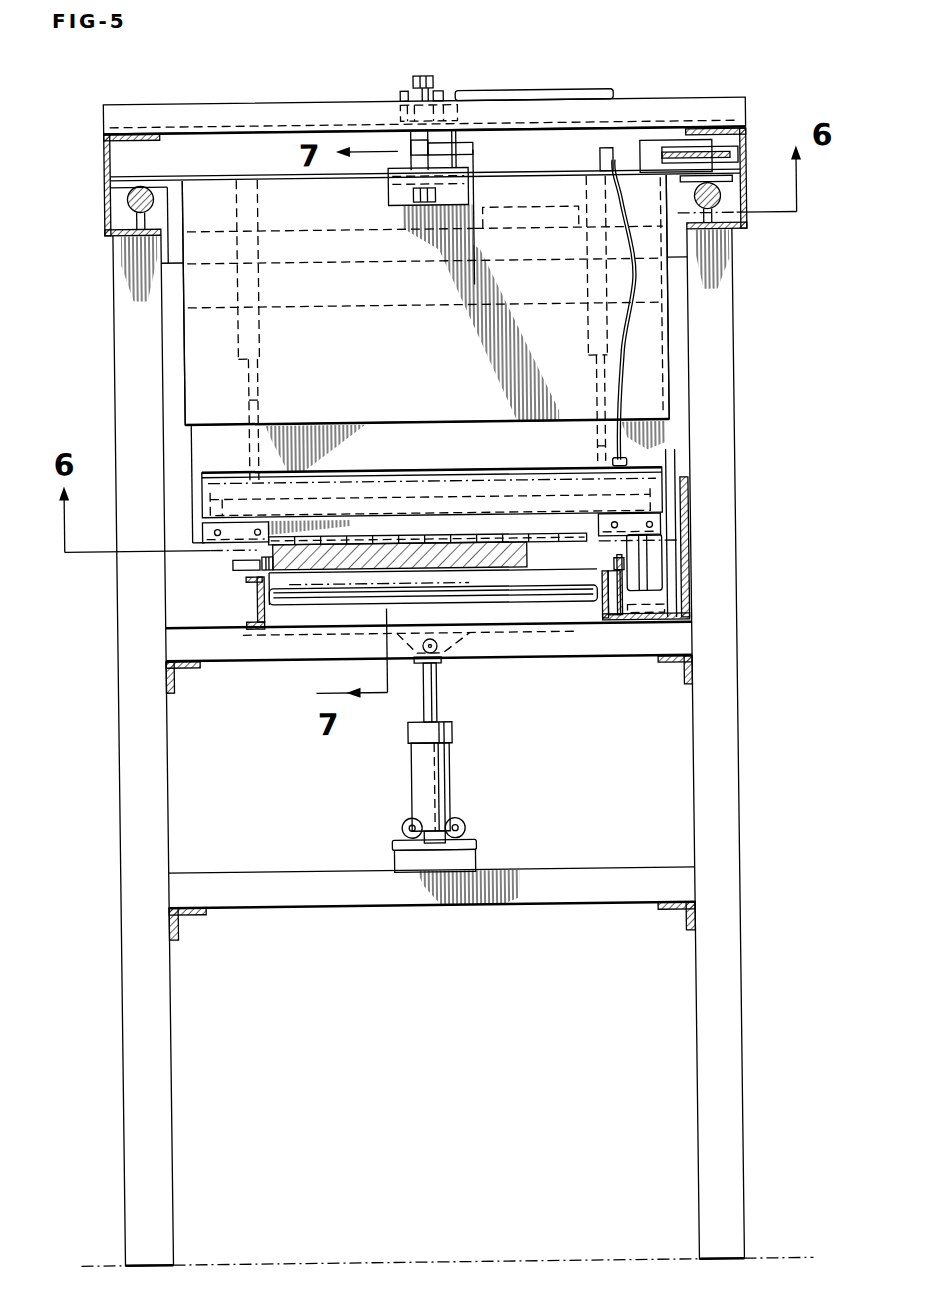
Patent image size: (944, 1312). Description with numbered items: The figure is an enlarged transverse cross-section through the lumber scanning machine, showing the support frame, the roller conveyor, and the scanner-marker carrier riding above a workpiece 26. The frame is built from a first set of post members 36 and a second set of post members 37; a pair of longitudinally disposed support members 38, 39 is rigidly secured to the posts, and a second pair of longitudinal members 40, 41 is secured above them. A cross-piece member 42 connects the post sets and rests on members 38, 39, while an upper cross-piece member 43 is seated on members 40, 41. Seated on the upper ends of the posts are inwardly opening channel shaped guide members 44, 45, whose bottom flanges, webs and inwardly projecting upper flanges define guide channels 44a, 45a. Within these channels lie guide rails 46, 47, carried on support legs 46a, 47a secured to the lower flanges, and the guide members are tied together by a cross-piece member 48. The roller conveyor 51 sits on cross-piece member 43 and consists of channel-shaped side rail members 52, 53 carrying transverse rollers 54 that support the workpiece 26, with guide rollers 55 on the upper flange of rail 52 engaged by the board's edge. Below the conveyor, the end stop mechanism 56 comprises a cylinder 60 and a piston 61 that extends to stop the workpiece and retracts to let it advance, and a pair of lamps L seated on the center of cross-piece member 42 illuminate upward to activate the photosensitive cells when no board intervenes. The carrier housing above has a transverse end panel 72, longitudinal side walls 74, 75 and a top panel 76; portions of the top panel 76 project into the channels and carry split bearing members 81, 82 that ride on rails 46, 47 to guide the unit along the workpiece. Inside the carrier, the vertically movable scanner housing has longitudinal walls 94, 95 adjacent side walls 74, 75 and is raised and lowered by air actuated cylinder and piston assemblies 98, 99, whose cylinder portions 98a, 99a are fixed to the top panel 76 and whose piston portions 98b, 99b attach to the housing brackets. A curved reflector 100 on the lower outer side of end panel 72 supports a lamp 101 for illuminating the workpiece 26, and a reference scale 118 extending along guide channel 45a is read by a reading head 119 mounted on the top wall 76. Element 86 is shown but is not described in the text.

The workpiece 26 is at (374, 569).
The post members 36 is at (124, 798).
The post members 37 is at (740, 804).
The longitudinal support member 38 is at (177, 930).
The longitudinal support member 39 is at (684, 926).
The longitudinal member 40 is at (180, 685).
The longitudinal member 41 is at (688, 685).
The cross-piece member 42 is at (432, 908).
The cross-piece member 43 is at (505, 660).
The channel shaped guide member 44 is at (106, 204).
The guide channel 44a is at (120, 153).
The channel shaped guide member 45 is at (744, 226).
The guide channel 45a is at (737, 132).
The guide rail 46 is at (140, 224).
The support legs 46a is at (124, 246).
The guide rail 47 is at (730, 199).
The support legs 47a is at (722, 246).
The cross-piece member 48 is at (245, 99).
The roller conveyor 51 is at (252, 589).
The channel-shaped side rail member 52 is at (252, 603).
The channel-shaped side rail member 53 is at (614, 625).
The rollers 54 is at (470, 592).
The guide rollers 55 is at (234, 563).
The end stop mechanism 56 is at (450, 761).
The cylinder 60 is at (410, 792).
The piston 61 is at (440, 692).
The transverse end panel 72 is at (424, 372).
The longitudinal side wall 74 is at (188, 354).
The longitudinal side wall 75 is at (672, 354).
The top panel 76 is at (306, 185).
The split bearing member 81 is at (131, 196).
The split bearing member 82 is at (726, 197).
The adjusting bolt 86 is at (437, 77).
The longitudinal wall 94 is at (192, 462).
The longitudinal wall 95 is at (668, 456).
The air actuated cylinder and piston assembly 98 is at (262, 331).
The cylinder portion 98a is at (288, 244).
The piston portion 98b is at (262, 386).
The air actuated cylinder and piston assembly 99 is at (592, 333).
The cylinder portion 99a is at (582, 246).
The piston portion 99b is at (598, 448).
The curved reflector 100 is at (410, 470).
The lamp 101 is at (349, 502).
The reference scale 118 is at (744, 160).
The reading head 119 is at (656, 144).
The lamps L is at (465, 828).